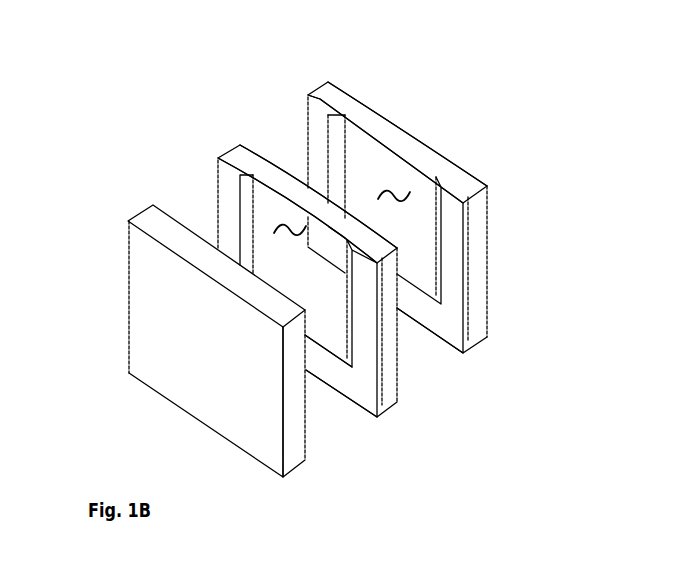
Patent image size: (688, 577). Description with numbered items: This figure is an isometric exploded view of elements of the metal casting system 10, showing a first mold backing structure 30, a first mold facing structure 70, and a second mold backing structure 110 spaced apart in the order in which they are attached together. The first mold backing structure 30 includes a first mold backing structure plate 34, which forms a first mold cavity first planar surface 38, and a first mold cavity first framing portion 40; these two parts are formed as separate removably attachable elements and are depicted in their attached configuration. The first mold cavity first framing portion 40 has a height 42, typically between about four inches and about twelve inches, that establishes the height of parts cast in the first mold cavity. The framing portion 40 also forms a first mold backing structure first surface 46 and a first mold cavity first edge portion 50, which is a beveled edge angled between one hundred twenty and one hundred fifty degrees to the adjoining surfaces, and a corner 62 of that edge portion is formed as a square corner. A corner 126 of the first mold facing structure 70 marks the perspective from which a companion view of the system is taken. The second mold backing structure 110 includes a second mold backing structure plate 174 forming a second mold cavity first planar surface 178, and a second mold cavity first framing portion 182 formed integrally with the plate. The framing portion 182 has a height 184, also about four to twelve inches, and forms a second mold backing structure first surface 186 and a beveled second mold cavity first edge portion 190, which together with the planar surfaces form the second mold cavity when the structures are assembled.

The metal casting system 10 is at (553, 378).
The first mold backing structure 30 is at (225, 127).
The first mold backing structure plate 34 is at (240, 155).
The first mold cavity first planar surface 38 is at (285, 223).
The first mold cavity first framing portion 40 is at (220, 190).
The height 42 is at (318, 217).
The first mold backing structure first surface 46 is at (359, 387).
The first mold cavity first edge portion 50 is at (255, 243).
The corner 62 is at (350, 372).
The first mold facing structure 70 is at (128, 277).
The second mold backing structure 110 is at (436, 150).
The corner 126 is at (282, 333).
The second mold backing structure plate 174 is at (358, 97).
The second mold cavity first planar surface 178 is at (396, 189).
The second mold cavity first framing portion 182 is at (307, 143).
The height 184 is at (420, 163).
The second mold backing structure first surface 186 is at (444, 317).
The second mold cavity first edge portion 190 is at (346, 142).